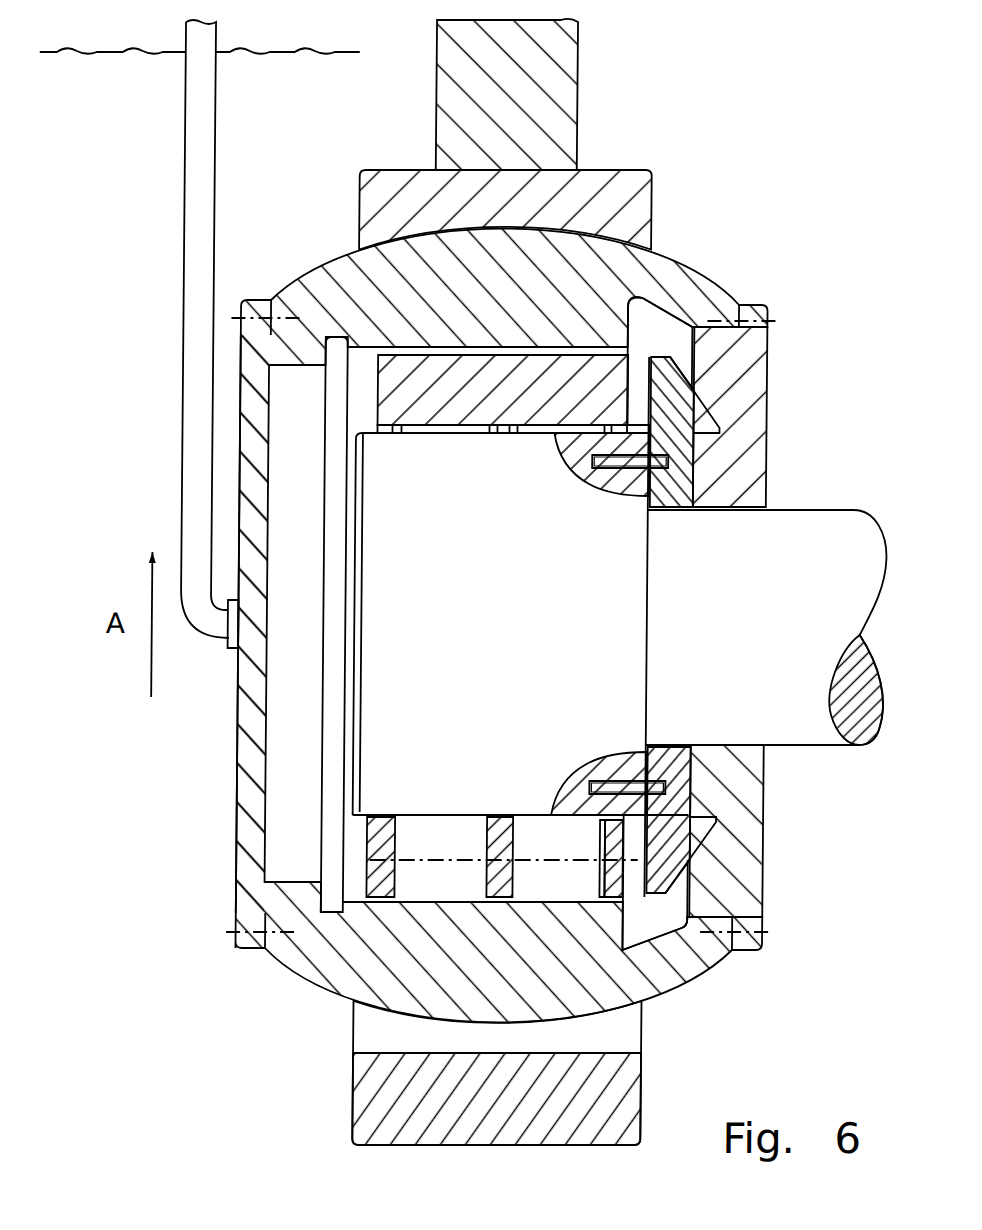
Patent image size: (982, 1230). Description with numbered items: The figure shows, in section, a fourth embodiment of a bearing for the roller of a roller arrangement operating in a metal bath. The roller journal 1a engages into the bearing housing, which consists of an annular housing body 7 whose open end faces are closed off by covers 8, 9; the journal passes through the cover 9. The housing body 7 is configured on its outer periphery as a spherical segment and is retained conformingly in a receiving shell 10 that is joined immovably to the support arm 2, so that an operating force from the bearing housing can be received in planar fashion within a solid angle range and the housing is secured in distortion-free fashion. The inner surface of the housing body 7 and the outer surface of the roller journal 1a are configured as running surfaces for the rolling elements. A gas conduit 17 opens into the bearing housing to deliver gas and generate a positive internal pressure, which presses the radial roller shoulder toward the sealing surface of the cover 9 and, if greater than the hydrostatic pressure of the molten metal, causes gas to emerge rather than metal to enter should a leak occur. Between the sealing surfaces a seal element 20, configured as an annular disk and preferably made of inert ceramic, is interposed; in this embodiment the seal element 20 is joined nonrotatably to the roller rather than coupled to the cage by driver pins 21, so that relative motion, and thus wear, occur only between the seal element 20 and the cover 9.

The roller journal 1a is at (785, 521).
The support arm 2 is at (554, 124).
The housing body 7 is at (693, 304).
The cover 8 is at (251, 485).
The cover 9 is at (755, 473).
The receiving shell 10 is at (552, 216).
The gas conduit 17 is at (197, 377).
The seal element 20 is at (655, 370).
The driver pins 21 is at (722, 400).